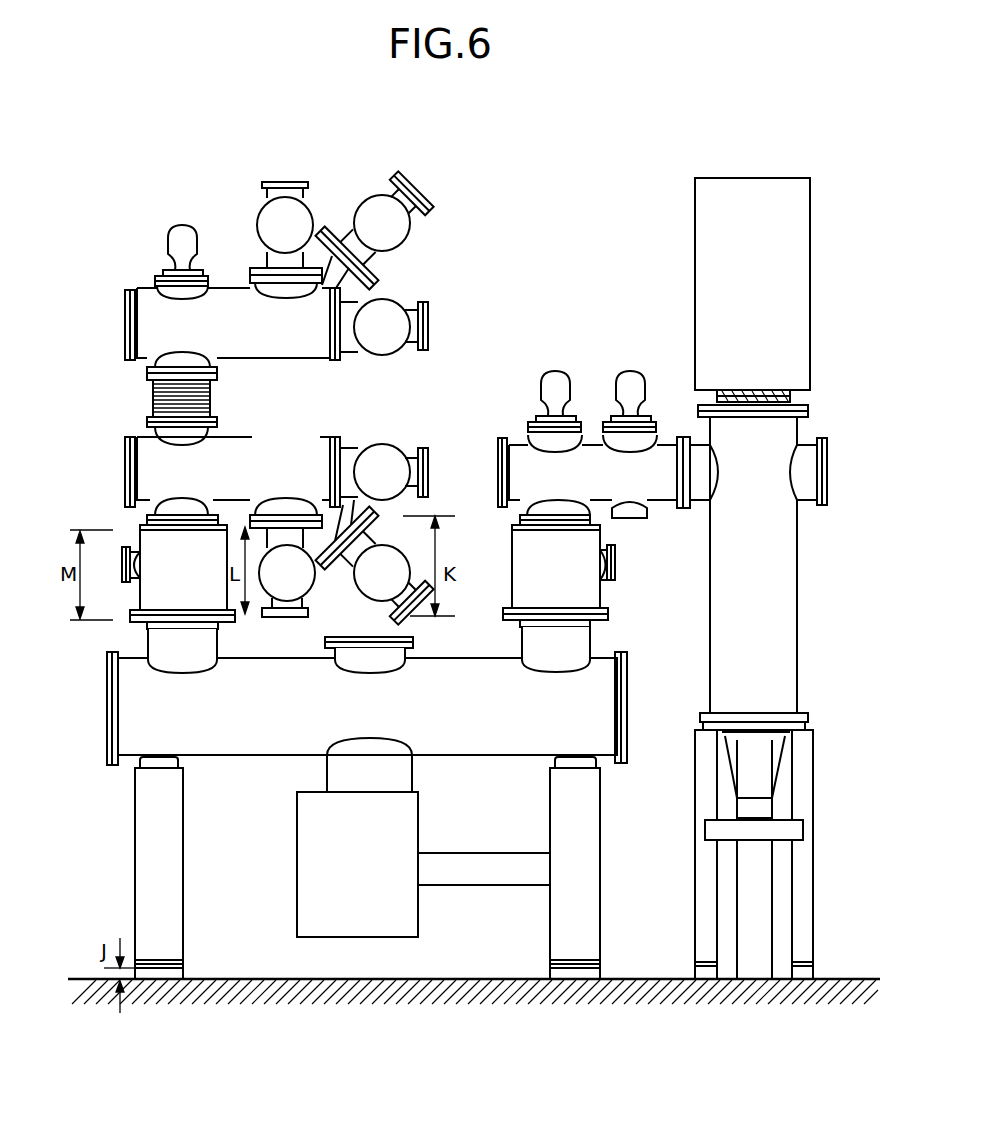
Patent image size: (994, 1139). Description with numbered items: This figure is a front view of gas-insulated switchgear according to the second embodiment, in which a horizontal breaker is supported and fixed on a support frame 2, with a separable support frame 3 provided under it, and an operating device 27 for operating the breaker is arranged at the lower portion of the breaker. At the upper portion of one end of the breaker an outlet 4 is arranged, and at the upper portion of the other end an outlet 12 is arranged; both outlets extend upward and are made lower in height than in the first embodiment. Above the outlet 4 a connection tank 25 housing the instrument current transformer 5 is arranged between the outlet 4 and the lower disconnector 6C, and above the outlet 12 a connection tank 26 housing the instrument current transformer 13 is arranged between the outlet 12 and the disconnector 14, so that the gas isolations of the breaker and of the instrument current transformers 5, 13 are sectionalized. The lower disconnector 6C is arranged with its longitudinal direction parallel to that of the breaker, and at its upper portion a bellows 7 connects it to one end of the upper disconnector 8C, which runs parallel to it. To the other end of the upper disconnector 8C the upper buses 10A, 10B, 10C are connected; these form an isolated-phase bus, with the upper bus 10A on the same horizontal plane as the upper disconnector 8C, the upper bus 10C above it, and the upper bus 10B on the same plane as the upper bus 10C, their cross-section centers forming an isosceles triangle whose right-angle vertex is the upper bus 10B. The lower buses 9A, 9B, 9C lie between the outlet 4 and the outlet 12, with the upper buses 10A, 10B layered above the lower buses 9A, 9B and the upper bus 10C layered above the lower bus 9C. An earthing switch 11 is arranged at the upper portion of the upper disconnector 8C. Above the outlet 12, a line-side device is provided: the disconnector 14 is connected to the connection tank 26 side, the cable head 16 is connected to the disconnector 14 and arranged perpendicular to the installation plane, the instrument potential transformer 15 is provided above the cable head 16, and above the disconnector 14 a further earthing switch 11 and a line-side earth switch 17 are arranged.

The support frame 2 is at (172, 845).
The support frame 3 is at (176, 972).
The outlet 4 is at (165, 641).
The instrument current transformer 5 is at (182, 590).
The lower disconnector 6C is at (146, 491).
The bellows 7 is at (213, 398).
The upper disconnector 8C is at (152, 327).
The lower bus 9A is at (386, 467).
The lower bus 9B is at (380, 578).
The lower bus 9C is at (285, 585).
The upper bus 10A is at (390, 333).
The upper bus 10B is at (370, 218).
The upper bus 10C is at (290, 207).
The earthing switch 11 is at (182, 228).
The outlet 12 is at (570, 651).
The instrument current transformer 13 is at (560, 590).
The disconnector 14 is at (522, 452).
The instrument potential transformer 15 is at (798, 278).
The cable head 16 is at (786, 592).
The line-side earth switch 17 is at (632, 392).
The connection tank 25 is at (168, 545).
The connection tank 26 is at (578, 540).
The operating device 27 is at (350, 920).